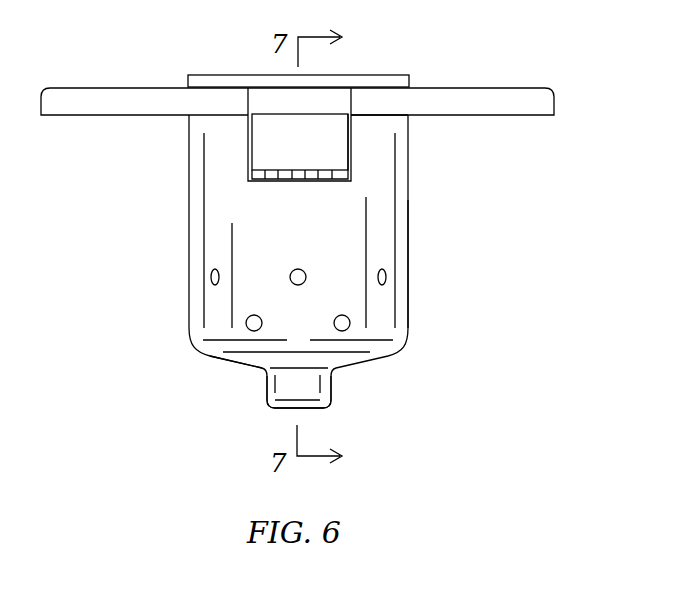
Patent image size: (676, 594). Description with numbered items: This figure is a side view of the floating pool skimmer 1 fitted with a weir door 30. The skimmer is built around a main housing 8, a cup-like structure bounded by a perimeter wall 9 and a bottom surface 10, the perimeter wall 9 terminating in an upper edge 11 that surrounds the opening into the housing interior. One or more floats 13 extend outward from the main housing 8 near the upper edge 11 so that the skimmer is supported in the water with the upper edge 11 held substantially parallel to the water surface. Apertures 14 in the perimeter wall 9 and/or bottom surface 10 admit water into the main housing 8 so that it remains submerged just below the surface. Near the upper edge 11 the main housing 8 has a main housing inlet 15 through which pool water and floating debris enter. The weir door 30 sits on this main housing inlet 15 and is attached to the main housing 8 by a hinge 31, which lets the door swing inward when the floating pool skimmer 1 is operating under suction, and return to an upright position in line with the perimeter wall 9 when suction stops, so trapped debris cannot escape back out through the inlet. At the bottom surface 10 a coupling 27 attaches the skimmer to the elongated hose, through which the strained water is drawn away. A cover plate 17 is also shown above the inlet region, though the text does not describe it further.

The floating pool skimmer 1 is at (522, 190).
The main housing 8 is at (380, 235).
The perimeter wall 9 is at (409, 268).
The bottom surface 10 is at (238, 360).
The upper edge 11 is at (410, 117).
The float 13 is at (98, 88).
The aperture 14 is at (212, 277).
The main housing inlet 15 is at (350, 152).
The cover plate 17 is at (213, 75).
The coupling 27 is at (267, 393).
The weir door 30 is at (278, 142).
The hinge 31 is at (288, 174).